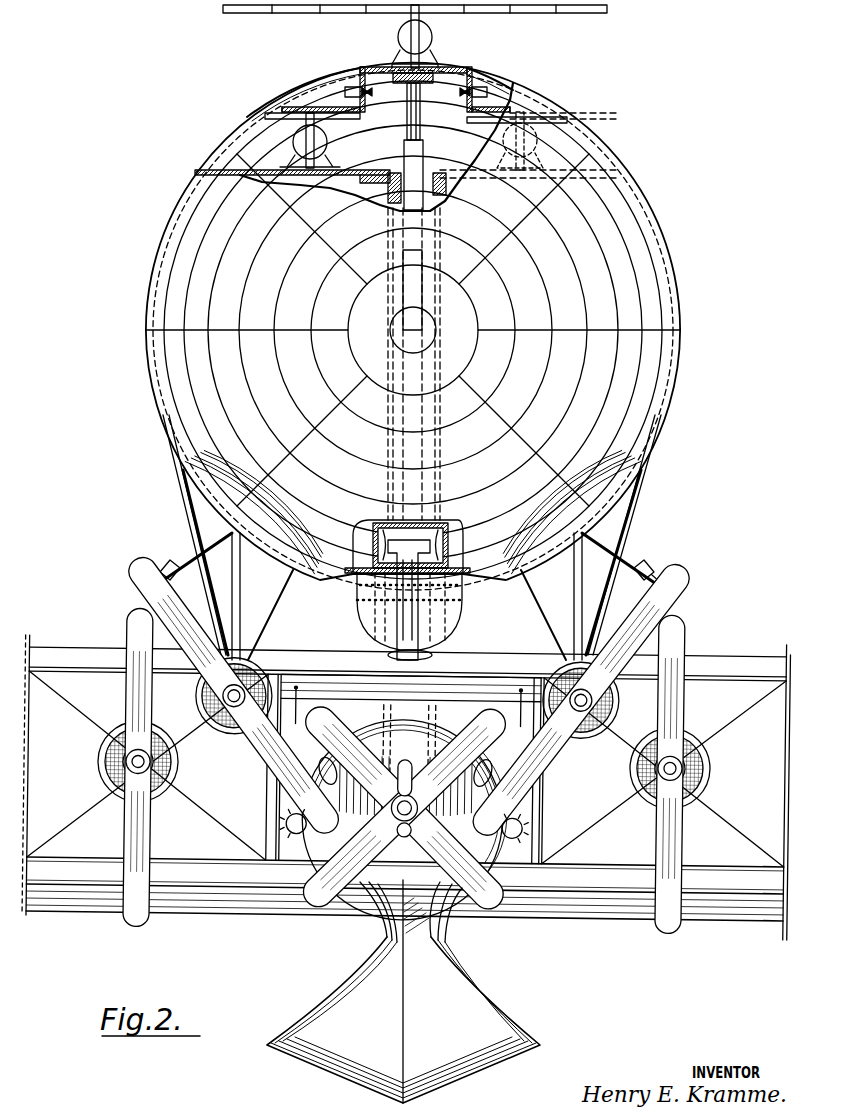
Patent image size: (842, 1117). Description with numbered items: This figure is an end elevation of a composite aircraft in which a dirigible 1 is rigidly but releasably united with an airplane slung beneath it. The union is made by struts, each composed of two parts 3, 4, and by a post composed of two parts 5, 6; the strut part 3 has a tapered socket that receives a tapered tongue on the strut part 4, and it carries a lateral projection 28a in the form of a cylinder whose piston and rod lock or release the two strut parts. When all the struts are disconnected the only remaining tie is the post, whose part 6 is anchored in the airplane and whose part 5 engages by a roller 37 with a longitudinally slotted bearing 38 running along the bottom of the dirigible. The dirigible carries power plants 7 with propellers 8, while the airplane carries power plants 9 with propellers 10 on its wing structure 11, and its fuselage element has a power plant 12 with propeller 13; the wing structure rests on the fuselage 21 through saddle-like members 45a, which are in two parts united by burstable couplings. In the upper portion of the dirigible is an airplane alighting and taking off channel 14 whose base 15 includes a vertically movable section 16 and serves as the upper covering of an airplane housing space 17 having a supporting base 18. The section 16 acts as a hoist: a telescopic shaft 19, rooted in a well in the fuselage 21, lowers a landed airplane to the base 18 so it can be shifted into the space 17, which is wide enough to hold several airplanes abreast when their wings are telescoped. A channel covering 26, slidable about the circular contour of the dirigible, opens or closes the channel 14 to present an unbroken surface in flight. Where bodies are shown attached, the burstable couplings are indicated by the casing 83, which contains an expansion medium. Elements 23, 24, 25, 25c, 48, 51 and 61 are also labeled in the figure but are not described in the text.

The dirigible 1 is at (670, 372).
The strut part 3 is at (200, 530).
The strut part 4 is at (180, 590).
The post part 5 is at (452, 588).
The post part 6 is at (432, 652).
The power plant 7 is at (268, 662).
The propeller 8 is at (126, 570).
The power plant 9 is at (96, 760).
The propeller 10 is at (132, 926).
The wing structure 11 is at (70, 652).
The power plant 12 is at (404, 813).
The propeller 13 is at (328, 902).
The airplane alighting and taking off channel 14 is at (470, 68).
The base of channel 15 is at (433, 108).
The vertically movable section 16 is at (433, 73).
The airplane housing space 17 is at (378, 126).
The supporting base 18 is at (398, 148).
The telescopic shaft 19 is at (423, 143).
The fuselage 21 is at (403, 809).
The bowl casing 23 is at (368, 622).
The bolt 24 is at (370, 92).
The auxiliary propeller 25 is at (398, 36).
The propeller bar 25c is at (296, 14).
The channel covering 26 is at (292, 88).
The lateral projection 28a is at (168, 560).
The roller 37 is at (363, 528).
The longitudinally slotted bearing 38 is at (358, 578).
The saddle-like members 45a is at (315, 868).
The fin 48 is at (403, 991).
The main propeller blade 51 is at (482, 736).
The cross beam 61 is at (462, 684).
The burstable coupling casing 83 is at (284, 826).